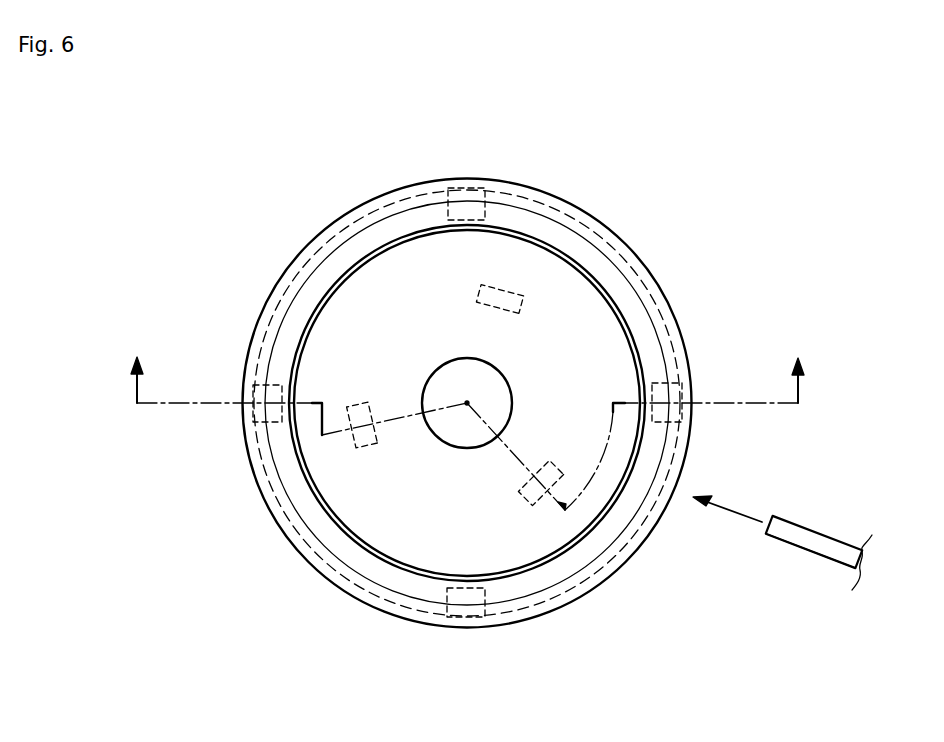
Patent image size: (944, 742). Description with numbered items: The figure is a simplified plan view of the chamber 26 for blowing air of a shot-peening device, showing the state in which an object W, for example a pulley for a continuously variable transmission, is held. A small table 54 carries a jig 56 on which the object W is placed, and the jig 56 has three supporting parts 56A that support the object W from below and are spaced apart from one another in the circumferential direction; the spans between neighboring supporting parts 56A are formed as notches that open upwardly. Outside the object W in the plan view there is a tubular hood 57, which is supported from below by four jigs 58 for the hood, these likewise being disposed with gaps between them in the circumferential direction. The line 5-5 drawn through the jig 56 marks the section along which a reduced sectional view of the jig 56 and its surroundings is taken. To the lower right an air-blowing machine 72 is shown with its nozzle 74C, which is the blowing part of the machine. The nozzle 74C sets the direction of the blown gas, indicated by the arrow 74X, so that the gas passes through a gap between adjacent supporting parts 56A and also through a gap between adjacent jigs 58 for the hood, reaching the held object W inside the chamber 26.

The chamber for blowing air 26 is at (681, 114).
The small table 54 is at (300, 140).
The jig 56 is at (277, 511).
The supporting parts 56A is at (500, 288).
The tubular hood 57 is at (655, 312).
The jigs for the hood 58 is at (436, 196).
The object W is at (580, 307).
The line 5- 5 is at (137, 385).
The air-blowing machine 72 is at (828, 518).
The arrow indicating direction of gas blown 74X is at (722, 510).
The nozzle 74C is at (810, 555).